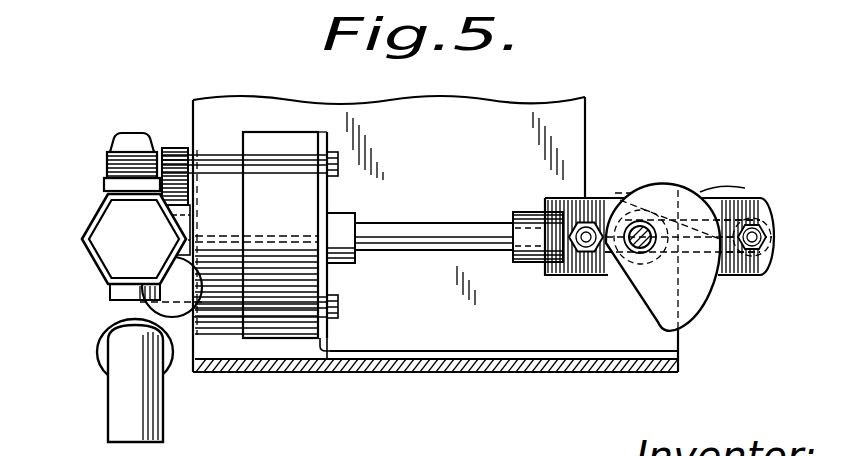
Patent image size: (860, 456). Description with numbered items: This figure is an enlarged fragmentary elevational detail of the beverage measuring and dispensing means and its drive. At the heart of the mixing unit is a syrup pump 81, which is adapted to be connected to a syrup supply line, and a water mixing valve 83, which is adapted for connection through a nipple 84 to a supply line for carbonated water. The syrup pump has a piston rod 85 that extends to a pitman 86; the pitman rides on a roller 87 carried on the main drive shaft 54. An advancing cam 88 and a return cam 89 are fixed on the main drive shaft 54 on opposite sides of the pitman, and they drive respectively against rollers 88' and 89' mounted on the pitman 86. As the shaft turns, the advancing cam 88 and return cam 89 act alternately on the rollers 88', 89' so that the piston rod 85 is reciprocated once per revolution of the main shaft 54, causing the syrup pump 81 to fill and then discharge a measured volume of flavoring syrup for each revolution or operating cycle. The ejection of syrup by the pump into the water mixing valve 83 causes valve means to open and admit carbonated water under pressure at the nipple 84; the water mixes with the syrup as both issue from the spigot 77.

The main drive shaft 54 is at (634, 247).
The spigot 77 is at (165, 413).
The syrup pump 81 is at (298, 223).
The water mixing valve 83 is at (100, 210).
The nipple 84 is at (107, 157).
The piston rod 85 is at (408, 223).
The pitman 86 is at (590, 205).
The roller 87 is at (668, 262).
The advancing cam 88 is at (688, 259).
The roller 88' is at (570, 267).
The return cam 89 is at (724, 170).
The roller 89' is at (777, 216).